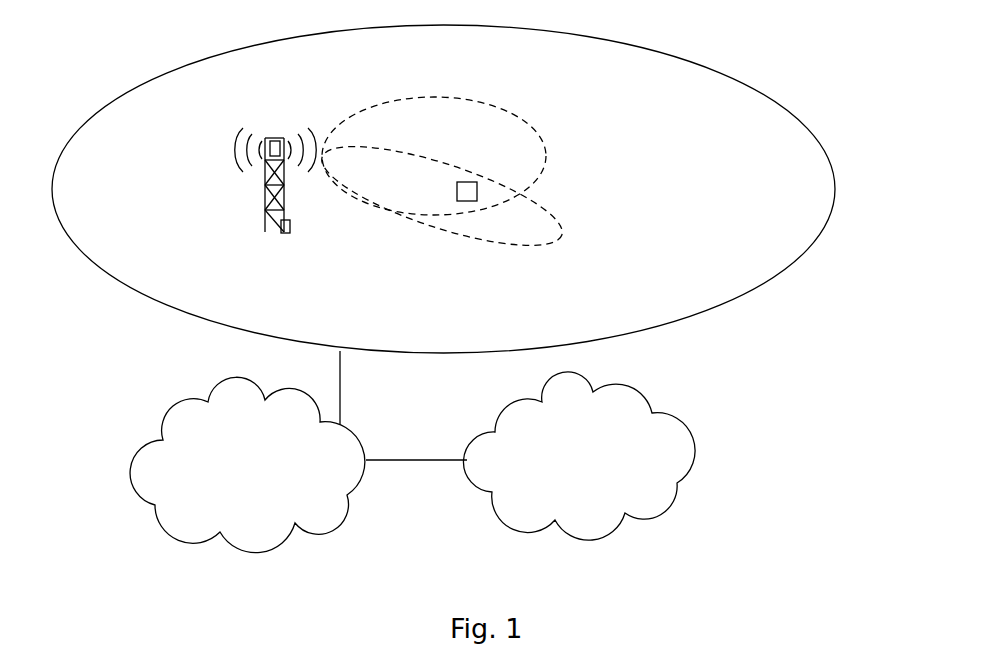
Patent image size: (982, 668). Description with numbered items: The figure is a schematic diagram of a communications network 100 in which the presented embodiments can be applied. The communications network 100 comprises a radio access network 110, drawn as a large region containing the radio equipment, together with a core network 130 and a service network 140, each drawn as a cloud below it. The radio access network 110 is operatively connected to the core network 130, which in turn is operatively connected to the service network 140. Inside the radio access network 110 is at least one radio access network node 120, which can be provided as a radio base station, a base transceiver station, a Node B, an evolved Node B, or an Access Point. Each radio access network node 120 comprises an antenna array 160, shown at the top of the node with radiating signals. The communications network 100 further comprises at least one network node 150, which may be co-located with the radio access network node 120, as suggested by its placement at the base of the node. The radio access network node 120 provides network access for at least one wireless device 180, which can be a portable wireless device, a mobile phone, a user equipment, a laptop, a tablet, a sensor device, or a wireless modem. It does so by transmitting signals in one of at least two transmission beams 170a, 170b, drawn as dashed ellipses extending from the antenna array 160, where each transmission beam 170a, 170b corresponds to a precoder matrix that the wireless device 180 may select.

The communications network 100 is at (786, 52).
The radio access network 110 is at (172, 312).
The radio access network node 120 is at (265, 224).
The core network 130 is at (247, 464).
The service network 140 is at (579, 456).
The network node 150 is at (290, 228).
The antenna array 160 is at (268, 137).
The transmission beam 170a is at (545, 148).
The transmission beam 170b is at (542, 224).
The wireless device 180 is at (476, 201).